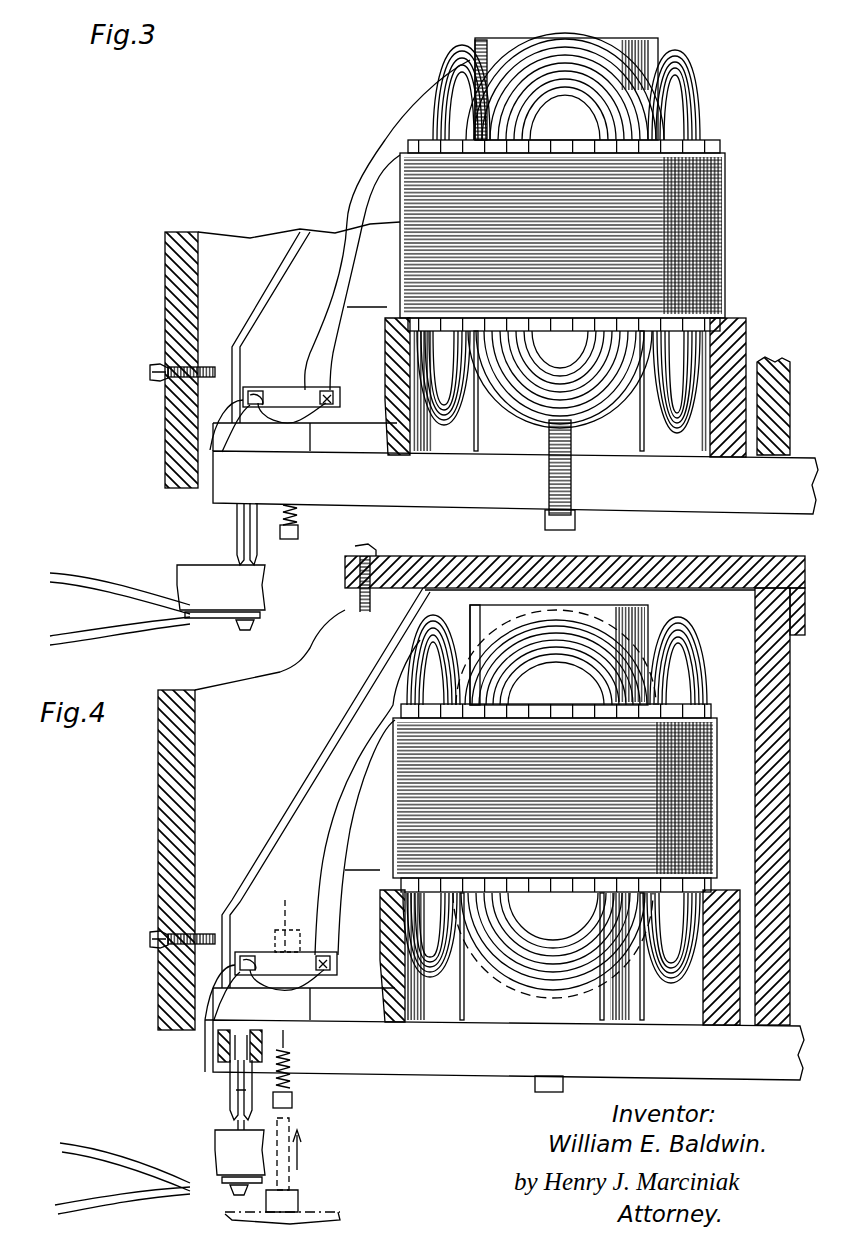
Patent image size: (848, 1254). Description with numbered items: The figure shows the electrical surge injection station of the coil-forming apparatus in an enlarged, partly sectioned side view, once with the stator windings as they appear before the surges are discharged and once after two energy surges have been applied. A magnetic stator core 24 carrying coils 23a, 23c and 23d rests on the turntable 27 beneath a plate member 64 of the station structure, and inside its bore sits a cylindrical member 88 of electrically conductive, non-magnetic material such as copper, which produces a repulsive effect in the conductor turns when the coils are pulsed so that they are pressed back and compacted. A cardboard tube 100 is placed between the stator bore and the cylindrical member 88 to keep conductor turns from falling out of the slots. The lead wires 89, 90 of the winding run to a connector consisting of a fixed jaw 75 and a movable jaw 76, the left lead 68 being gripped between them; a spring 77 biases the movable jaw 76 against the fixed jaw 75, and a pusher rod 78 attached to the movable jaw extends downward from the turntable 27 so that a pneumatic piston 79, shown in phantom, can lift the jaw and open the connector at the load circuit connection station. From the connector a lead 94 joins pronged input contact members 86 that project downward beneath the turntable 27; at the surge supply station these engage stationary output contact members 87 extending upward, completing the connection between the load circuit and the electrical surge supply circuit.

In FIG. 3, the coil 23a is at (442, 72).
In FIG. 4, the coil 23a is at (405, 648).
In FIG. 4, the coil 23c is at (705, 650).
In FIG. 4, the coil 23d is at (570, 648).
In FIG. 3, the stator core 24 is at (728, 260).
In FIG. 4, the stator core 24 is at (712, 800).
In FIG. 3, the turntable 27 is at (196, 505).
In FIG. 4, the turntable 27 is at (191, 1060).
In FIG. 3, the end shield plate 64 is at (676, 554).
In FIG. 4, the end shield plate 64 is at (676, 554).
In FIG. 4, the left lead 68 is at (286, 914).
In FIG. 3, the fixed jaw 75 is at (335, 388).
In FIG. 4, the fixed jaw 75 is at (325, 955).
In FIG. 3, the movable jaw 76 is at (282, 388).
In FIG. 4, the movable jaw 76 is at (265, 952).
In FIG. 3, the spring 77 is at (298, 516).
In FIG. 4, the spring 77 is at (292, 1086).
In FIG. 3, the pusher rod 78 is at (298, 535).
In FIG. 4, the pusher rod 78 is at (292, 1105).
In FIG. 4, the pneumatic piston 79 is at (300, 1178).
In FIG. 3, the input contact member 86 is at (236, 527).
In FIG. 4, the input contact member 86 is at (228, 1087).
In FIG. 3, the output contact member 87 is at (238, 556).
In FIG. 4, the output contact member 87 is at (230, 1121).
In FIG. 3, the cylindrical member 88 is at (522, 80).
In FIG. 3, the lead wire 89 is at (372, 162).
In FIG. 4, the lead wire 89 is at (341, 803).
In FIG. 3, the lead wire 90 is at (374, 192).
In FIG. 4, the lead wire 90 is at (351, 830).
In FIG. 3, the lead 94 is at (318, 430).
In FIG. 4, the lead 94 is at (312, 992).
In FIG. 3, the cardboard tube 100 is at (476, 44).
In FIG. 4, the cardboard tube 100 is at (648, 615).